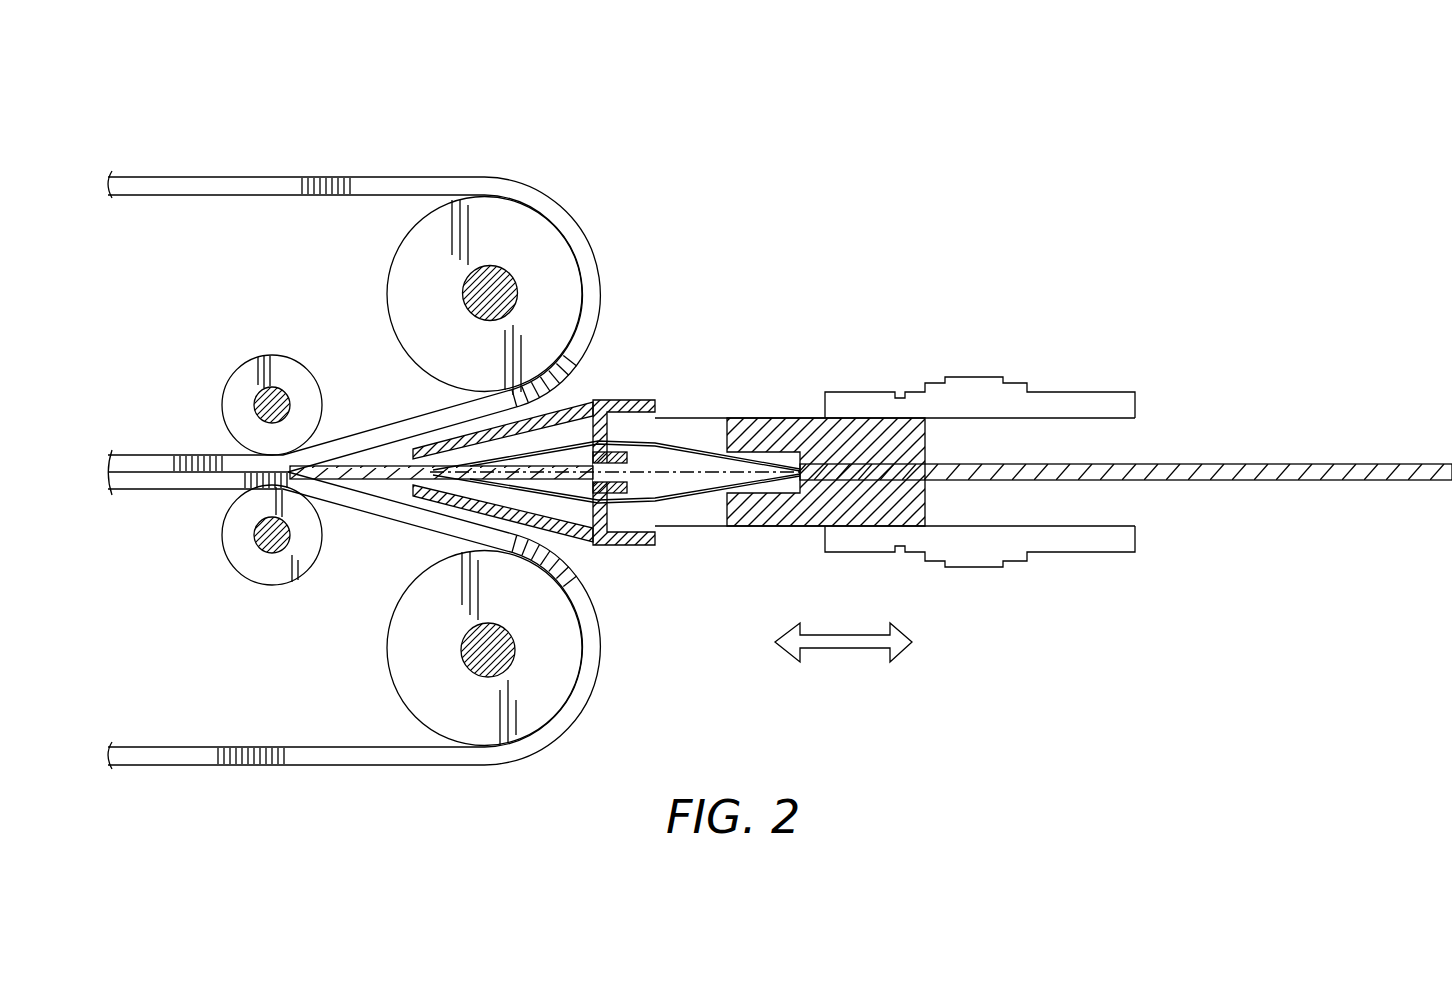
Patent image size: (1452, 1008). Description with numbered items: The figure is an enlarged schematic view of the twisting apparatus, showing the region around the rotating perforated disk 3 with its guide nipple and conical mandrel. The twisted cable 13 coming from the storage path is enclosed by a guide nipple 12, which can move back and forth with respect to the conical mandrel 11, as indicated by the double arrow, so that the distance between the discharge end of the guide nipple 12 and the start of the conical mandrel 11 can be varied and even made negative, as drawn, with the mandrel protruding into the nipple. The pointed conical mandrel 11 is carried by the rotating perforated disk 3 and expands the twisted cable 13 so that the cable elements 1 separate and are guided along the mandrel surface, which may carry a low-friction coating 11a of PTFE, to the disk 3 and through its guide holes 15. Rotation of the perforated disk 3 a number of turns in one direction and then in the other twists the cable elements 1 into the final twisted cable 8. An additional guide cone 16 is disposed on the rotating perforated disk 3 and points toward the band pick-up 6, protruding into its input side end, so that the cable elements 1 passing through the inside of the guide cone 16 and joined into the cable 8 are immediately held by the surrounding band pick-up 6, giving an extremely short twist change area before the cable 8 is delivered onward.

The cable elements 1 is at (690, 455).
The rotating perforated disk 3 is at (630, 400).
The band pick-up 6 is at (512, 225).
The twisted cable 8 is at (343, 480).
The conical mandrel 11 is at (673, 478).
The coating 11a is at (693, 478).
The guide nipple 12 is at (867, 433).
The twisted cable 13 is at (1165, 463).
The guide holes 15 is at (580, 410).
The guide cone 16 is at (445, 437).